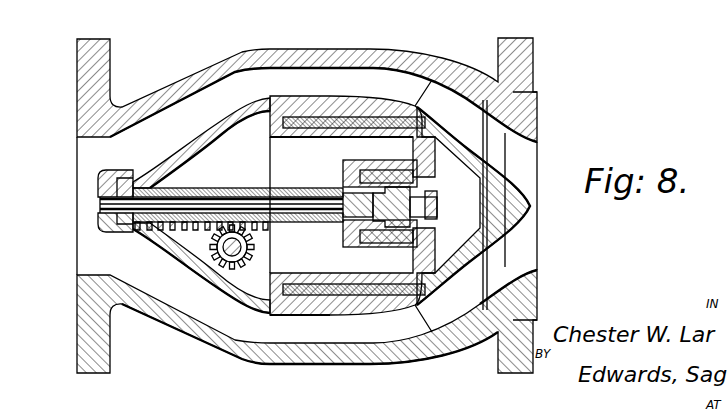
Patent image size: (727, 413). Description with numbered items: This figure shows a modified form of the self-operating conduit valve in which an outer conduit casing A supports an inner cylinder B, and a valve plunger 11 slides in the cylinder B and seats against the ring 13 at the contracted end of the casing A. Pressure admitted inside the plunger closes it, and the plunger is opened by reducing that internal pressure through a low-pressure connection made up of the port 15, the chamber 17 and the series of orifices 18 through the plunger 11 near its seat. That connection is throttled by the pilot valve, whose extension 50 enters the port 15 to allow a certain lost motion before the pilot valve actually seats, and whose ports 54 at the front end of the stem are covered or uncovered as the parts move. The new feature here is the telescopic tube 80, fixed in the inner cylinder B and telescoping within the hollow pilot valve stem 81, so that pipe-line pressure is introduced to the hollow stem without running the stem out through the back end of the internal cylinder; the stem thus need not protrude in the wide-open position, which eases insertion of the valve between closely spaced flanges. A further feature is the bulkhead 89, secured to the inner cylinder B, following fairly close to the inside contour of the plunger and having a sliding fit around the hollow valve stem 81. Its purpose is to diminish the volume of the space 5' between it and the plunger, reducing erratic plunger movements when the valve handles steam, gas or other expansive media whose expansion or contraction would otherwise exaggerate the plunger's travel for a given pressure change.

The outer conduit casing A is at (390, 60).
The inner cylinder B is at (218, 123).
The valve plunger 11 is at (340, 118).
The ring 13 is at (535, 123).
The series of orifices 18 is at (457, 142).
The space 5' is at (400, 208).
The port 15 is at (432, 198).
The extension 50 is at (405, 203).
The chamber 17 is at (441, 217).
The ports 54 is at (368, 203).
The bulkhead 89 is at (287, 138).
The telescopic tube 80 is at (130, 182).
The hollow pilot valve stem 81 is at (211, 192).